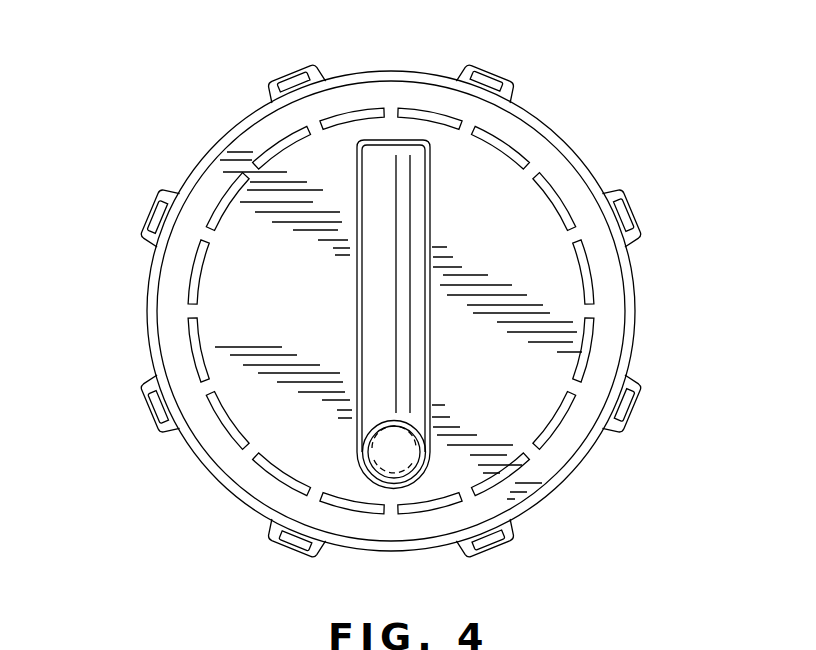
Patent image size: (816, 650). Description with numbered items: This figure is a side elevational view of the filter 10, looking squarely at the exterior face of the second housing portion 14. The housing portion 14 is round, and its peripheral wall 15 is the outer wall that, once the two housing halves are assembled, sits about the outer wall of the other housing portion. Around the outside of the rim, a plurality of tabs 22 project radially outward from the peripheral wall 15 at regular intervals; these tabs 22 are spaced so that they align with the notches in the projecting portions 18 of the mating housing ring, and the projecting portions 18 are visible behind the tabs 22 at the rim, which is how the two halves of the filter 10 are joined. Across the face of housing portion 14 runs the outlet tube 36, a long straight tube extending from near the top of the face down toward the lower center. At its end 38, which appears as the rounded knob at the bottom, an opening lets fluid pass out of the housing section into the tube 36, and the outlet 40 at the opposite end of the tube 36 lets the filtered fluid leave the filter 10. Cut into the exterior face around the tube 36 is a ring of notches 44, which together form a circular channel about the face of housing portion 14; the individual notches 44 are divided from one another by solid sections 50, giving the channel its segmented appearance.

The filter 10 is at (118, 360).
The second housing portion 14 is at (577, 190).
The peripheral wall 15 is at (620, 649).
The projecting portions 18 is at (148, 226).
The tabs 22 is at (170, 192).
The outlet tube 36 is at (370, 323).
The end 38 is at (408, 450).
The outlet 40 is at (394, 142).
The notches 44 is at (596, 296).
The solid sections 50 is at (468, 120).